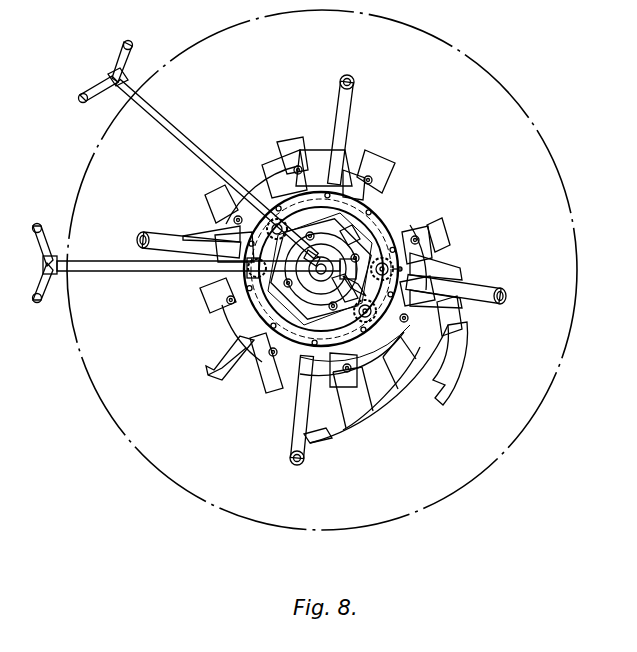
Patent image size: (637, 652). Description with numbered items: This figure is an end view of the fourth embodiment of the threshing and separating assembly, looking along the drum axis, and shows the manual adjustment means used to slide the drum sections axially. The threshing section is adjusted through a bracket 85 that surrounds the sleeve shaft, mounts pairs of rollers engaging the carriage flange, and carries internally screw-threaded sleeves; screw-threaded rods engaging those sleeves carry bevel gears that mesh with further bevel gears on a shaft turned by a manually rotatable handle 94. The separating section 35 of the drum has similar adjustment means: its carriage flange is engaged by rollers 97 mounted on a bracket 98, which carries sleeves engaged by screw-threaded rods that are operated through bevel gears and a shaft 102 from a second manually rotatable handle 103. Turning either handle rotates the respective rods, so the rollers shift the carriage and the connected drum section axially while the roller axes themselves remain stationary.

The separating section 35 is at (412, 410).
The bracket 85 is at (352, 222).
The handle 94 is at (83, 103).
The rollers 97 is at (270, 364).
The bracket 98 is at (290, 305).
The shaft 102 is at (112, 272).
The handle 103 is at (43, 227).